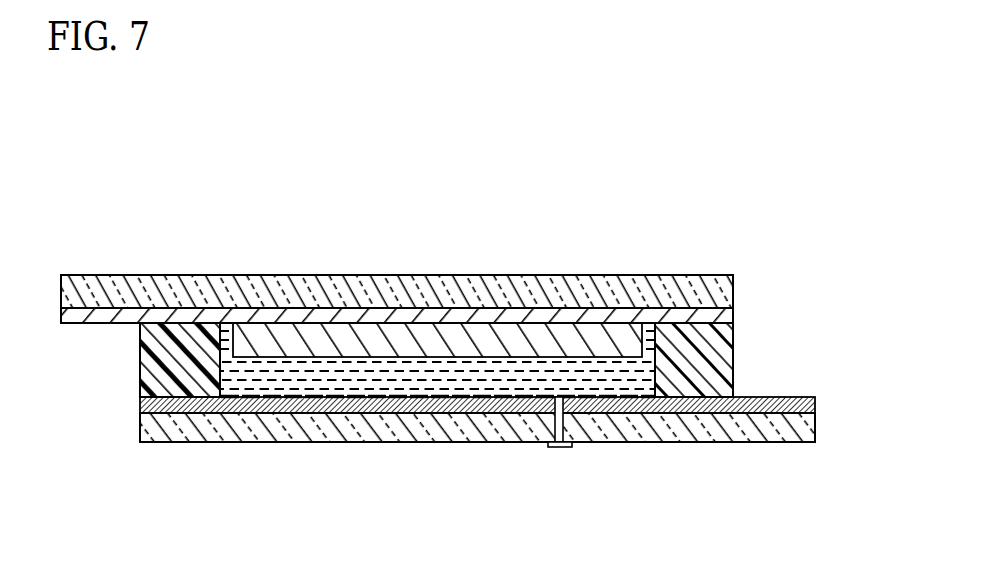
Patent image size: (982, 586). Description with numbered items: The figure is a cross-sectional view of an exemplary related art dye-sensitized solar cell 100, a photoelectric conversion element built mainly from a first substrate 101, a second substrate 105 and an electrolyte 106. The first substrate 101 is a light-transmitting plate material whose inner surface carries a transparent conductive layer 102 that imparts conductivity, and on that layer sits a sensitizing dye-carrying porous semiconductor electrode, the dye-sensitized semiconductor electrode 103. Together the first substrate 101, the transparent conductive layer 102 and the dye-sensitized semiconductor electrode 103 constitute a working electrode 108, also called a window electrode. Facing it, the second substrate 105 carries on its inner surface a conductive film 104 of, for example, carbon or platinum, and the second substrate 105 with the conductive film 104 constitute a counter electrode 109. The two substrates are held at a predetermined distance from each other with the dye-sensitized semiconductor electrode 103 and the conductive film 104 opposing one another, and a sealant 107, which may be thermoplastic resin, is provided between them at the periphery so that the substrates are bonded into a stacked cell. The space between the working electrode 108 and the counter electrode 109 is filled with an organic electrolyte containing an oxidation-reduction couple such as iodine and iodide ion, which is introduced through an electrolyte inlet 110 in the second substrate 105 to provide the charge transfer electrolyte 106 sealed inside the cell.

The dye-sensitized solar cell 100 is at (735, 192).
The first substrate 101 is at (356, 286).
The transparent conductive layer 102 is at (405, 316).
The dye-sensitized semiconductor electrode 103 is at (453, 334).
The conductive film 104 is at (400, 405).
The second substrate 105 is at (482, 426).
The electrolyte 106 is at (285, 390).
The sealant 107 is at (178, 392).
The working electrode 108 is at (477, 210).
The counter electrode 109 is at (508, 507).
The electrolyte inlet 110 is at (561, 448).